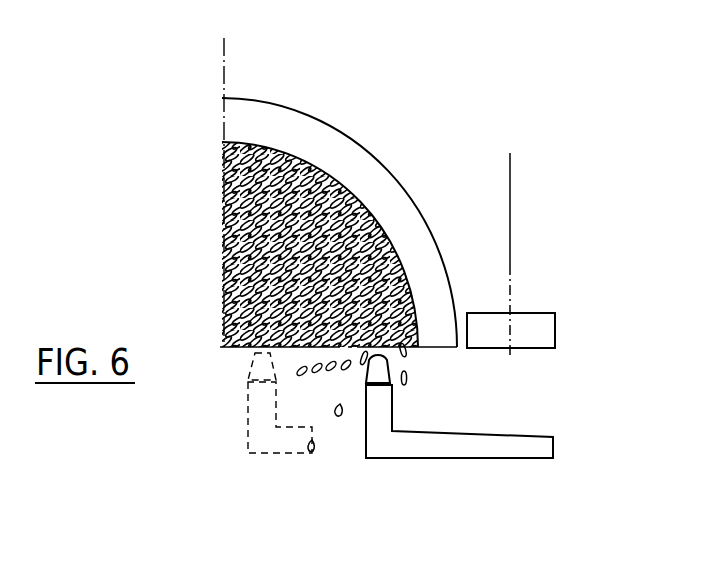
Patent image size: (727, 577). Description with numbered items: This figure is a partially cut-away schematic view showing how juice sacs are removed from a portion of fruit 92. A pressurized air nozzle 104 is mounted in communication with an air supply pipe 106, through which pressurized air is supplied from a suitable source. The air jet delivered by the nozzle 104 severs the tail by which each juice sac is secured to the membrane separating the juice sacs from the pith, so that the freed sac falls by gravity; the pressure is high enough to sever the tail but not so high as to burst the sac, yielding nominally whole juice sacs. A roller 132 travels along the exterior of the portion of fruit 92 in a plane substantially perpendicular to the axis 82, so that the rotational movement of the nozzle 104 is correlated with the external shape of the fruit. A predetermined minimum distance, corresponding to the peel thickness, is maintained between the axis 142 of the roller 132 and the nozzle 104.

The axis 82 is at (224, 62).
The portion of fruit 92 is at (374, 172).
The axis of roller 142 is at (511, 178).
The roller 132 is at (533, 330).
The pressurized air nozzle 104 is at (384, 378).
The air supply pipe 106 is at (446, 445).